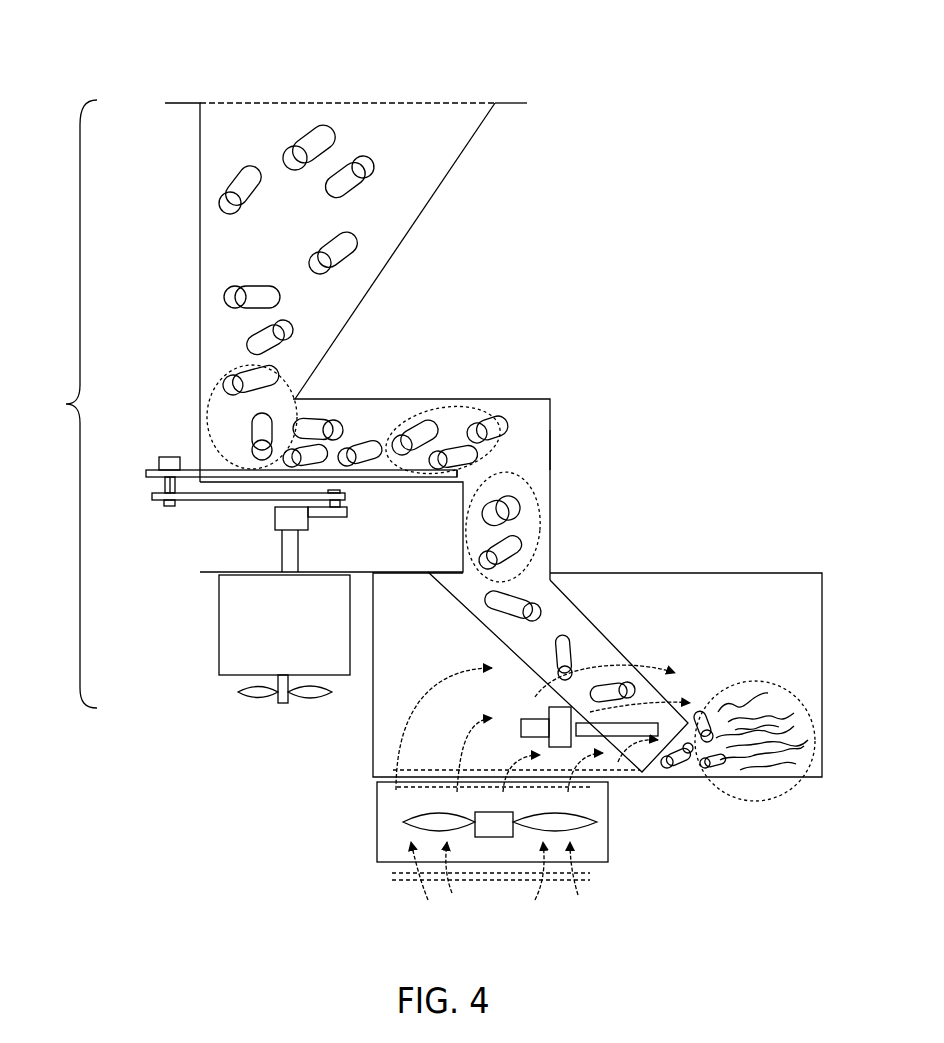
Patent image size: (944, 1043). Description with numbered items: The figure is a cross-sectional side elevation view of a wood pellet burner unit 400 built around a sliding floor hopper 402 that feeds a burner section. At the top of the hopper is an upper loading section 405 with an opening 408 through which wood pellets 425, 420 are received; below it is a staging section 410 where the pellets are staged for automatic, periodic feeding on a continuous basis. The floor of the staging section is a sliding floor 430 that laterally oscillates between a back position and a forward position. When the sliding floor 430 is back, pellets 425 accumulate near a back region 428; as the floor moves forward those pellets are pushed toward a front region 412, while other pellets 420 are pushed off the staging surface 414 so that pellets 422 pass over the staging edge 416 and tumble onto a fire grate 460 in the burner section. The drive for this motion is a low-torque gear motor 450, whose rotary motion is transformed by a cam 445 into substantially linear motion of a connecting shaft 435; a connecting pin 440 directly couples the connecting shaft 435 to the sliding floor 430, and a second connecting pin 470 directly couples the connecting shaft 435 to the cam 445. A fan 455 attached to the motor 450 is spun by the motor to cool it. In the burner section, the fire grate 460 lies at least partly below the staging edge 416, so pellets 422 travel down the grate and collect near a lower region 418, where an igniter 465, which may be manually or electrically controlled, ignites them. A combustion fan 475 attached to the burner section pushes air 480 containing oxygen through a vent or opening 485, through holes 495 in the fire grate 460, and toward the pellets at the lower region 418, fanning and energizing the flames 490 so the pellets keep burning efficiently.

The wood pellet burner unit 400 is at (717, 168).
The sliding floor hopper 402 is at (61, 404).
The upper loading section 405 is at (433, 185).
The opening 408 is at (333, 83).
The staging section 410 is at (482, 398).
The front region 412 is at (551, 447).
The staging surface 414 is at (413, 482).
The staging edge 416 is at (468, 485).
The lower region 418 is at (766, 687).
The wood pellets 420 is at (445, 410).
The wood pellets 422 is at (541, 541).
The wood pellets 425 is at (245, 383).
The back region 428 is at (204, 412).
The sliding floor 430 is at (203, 462).
The connecting shaft 435 is at (242, 500).
The connecting pin 440 is at (162, 490).
The cam 445 is at (276, 520).
The motor 450 is at (219, 635).
The fan 455 is at (257, 696).
The fire grate 460 is at (597, 627).
The igniter 465 is at (523, 718).
The second connecting pin 470 is at (343, 514).
The combustion fan 475 is at (375, 830).
The air 480 is at (590, 877).
The vent or opening 485 is at (387, 770).
The flames 490 is at (800, 720).
The holes 495 is at (547, 688).